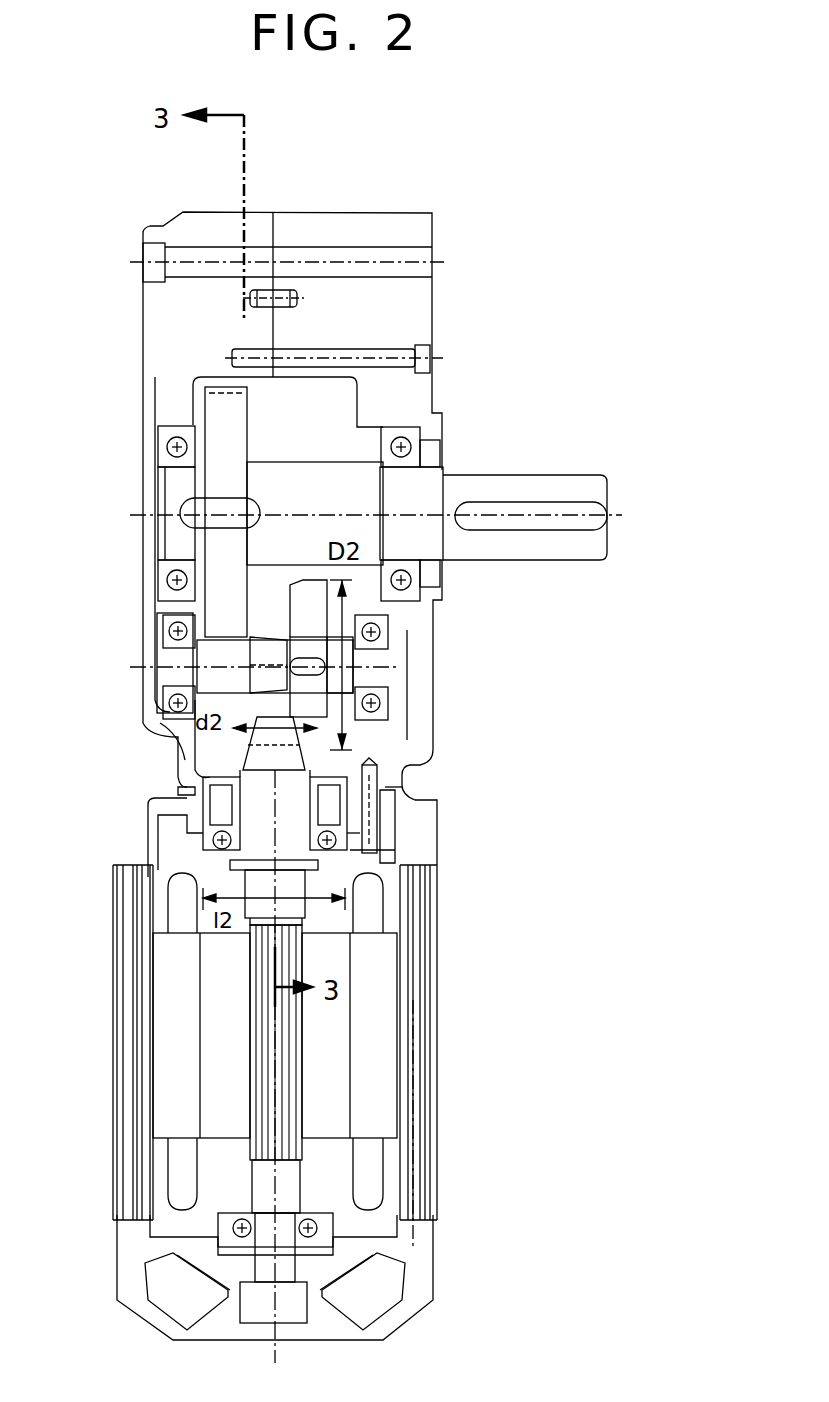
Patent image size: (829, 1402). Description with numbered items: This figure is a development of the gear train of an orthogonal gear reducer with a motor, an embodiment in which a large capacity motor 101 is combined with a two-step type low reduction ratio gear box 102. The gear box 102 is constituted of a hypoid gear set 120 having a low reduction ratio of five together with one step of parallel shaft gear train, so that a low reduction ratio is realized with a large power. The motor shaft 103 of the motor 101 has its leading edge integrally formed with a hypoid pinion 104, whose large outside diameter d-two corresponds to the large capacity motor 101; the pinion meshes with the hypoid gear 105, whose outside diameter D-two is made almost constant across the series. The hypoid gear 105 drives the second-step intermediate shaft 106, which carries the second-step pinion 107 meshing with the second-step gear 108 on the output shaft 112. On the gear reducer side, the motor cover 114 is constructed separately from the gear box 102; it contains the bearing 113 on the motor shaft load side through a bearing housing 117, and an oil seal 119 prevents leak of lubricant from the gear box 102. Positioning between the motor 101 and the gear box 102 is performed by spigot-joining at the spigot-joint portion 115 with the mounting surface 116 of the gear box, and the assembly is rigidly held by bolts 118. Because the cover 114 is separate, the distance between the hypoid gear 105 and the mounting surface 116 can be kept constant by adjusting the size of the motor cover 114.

The large capacity motor 101 is at (423, 1048).
The gear box 102 is at (247, 233).
The motor shaft 103 is at (290, 908).
The hypoid pinion 104 is at (290, 758).
The hypoid gear 105 is at (313, 703).
The second-step intermediate shaft 106 is at (370, 662).
The second-step pinion 107 is at (233, 653).
The second-step gear 108 is at (227, 425).
The output shaft 112 is at (467, 490).
The bearing 113 is at (353, 873).
The motor cover 114 is at (197, 807).
The spigot-joint portion 115 is at (187, 787).
The mounting surface 116 is at (187, 793).
The bearing housing 117 is at (380, 850).
The bolt 118 is at (405, 830).
The oil seal 119 is at (393, 787).
The hypoid gear set 120 is at (368, 732).